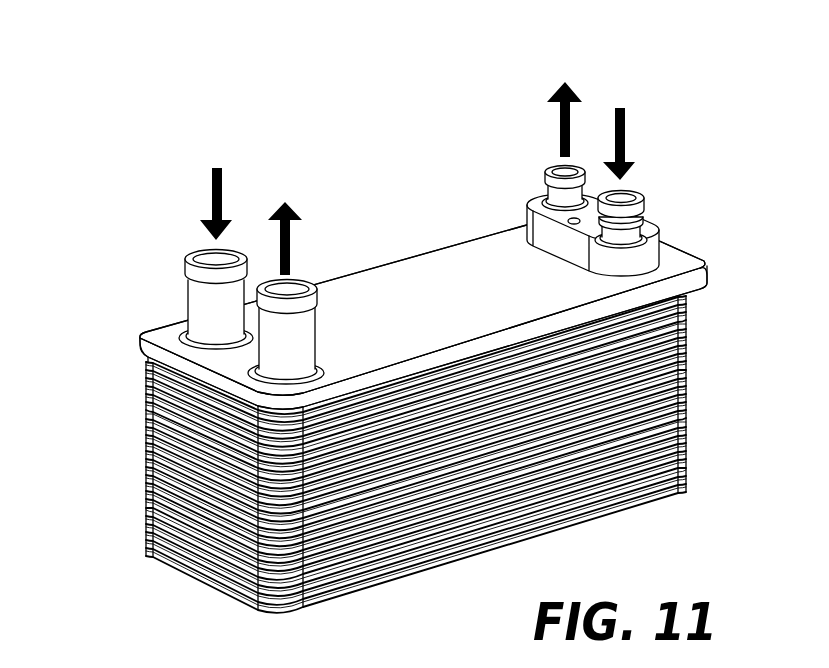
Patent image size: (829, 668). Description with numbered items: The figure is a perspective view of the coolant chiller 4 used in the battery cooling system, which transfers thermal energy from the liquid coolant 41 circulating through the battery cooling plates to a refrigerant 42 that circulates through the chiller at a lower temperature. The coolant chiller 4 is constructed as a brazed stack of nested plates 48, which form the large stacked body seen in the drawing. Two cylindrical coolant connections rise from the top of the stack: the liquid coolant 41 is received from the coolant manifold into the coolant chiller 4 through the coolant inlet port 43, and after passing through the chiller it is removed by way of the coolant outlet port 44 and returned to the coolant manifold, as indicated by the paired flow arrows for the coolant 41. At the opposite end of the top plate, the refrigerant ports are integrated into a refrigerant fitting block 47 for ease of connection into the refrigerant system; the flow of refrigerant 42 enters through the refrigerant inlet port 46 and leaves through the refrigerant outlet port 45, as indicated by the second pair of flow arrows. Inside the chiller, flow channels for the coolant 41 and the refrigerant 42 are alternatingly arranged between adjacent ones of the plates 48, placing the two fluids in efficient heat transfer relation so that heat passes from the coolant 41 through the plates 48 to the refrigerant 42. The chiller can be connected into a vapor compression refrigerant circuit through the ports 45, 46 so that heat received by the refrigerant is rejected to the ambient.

The coolant chiller 4 is at (400, 217).
The liquid coolant 41 is at (275, 205).
The refrigerant 42 is at (622, 115).
The coolant inlet port 43 is at (197, 298).
The coolant outlet port 44 is at (302, 322).
The refrigerant outlet port 45 is at (547, 167).
The refrigerant inlet port 46 is at (632, 190).
The refrigerant fitting block 47 is at (645, 252).
The nested plates 48 is at (162, 457).